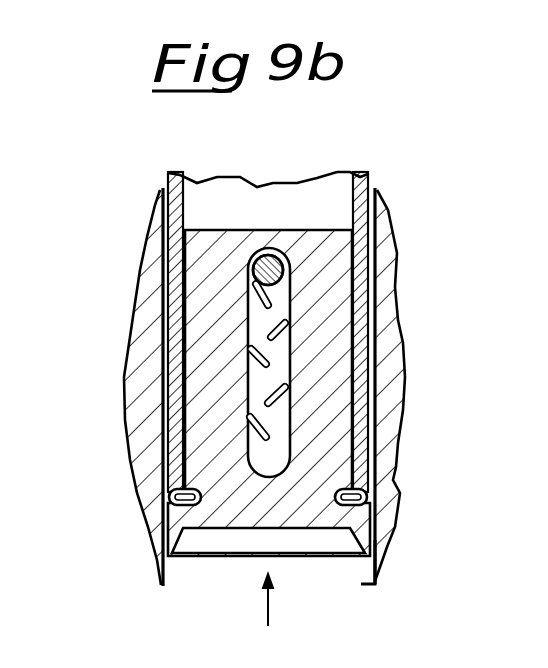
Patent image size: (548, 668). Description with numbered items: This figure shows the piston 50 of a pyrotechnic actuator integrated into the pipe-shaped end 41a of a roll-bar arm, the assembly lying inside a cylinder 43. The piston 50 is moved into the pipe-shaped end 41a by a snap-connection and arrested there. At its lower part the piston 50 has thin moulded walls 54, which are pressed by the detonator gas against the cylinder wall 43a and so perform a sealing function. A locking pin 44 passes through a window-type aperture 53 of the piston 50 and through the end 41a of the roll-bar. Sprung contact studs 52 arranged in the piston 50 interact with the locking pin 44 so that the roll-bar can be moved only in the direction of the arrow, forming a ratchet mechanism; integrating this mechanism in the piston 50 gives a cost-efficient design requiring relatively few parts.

The pipe-shaped end of the roll-bar arm 41a is at (380, 266).
The cylinder 43 is at (187, 575).
The cylinder wall 43a is at (374, 576).
The locking pin 44 is at (256, 262).
The piston 50 is at (340, 333).
The sprung contact studs 52 is at (250, 292).
The window-type aperture 53 is at (283, 448).
The thin moulded walls 54 is at (362, 543).